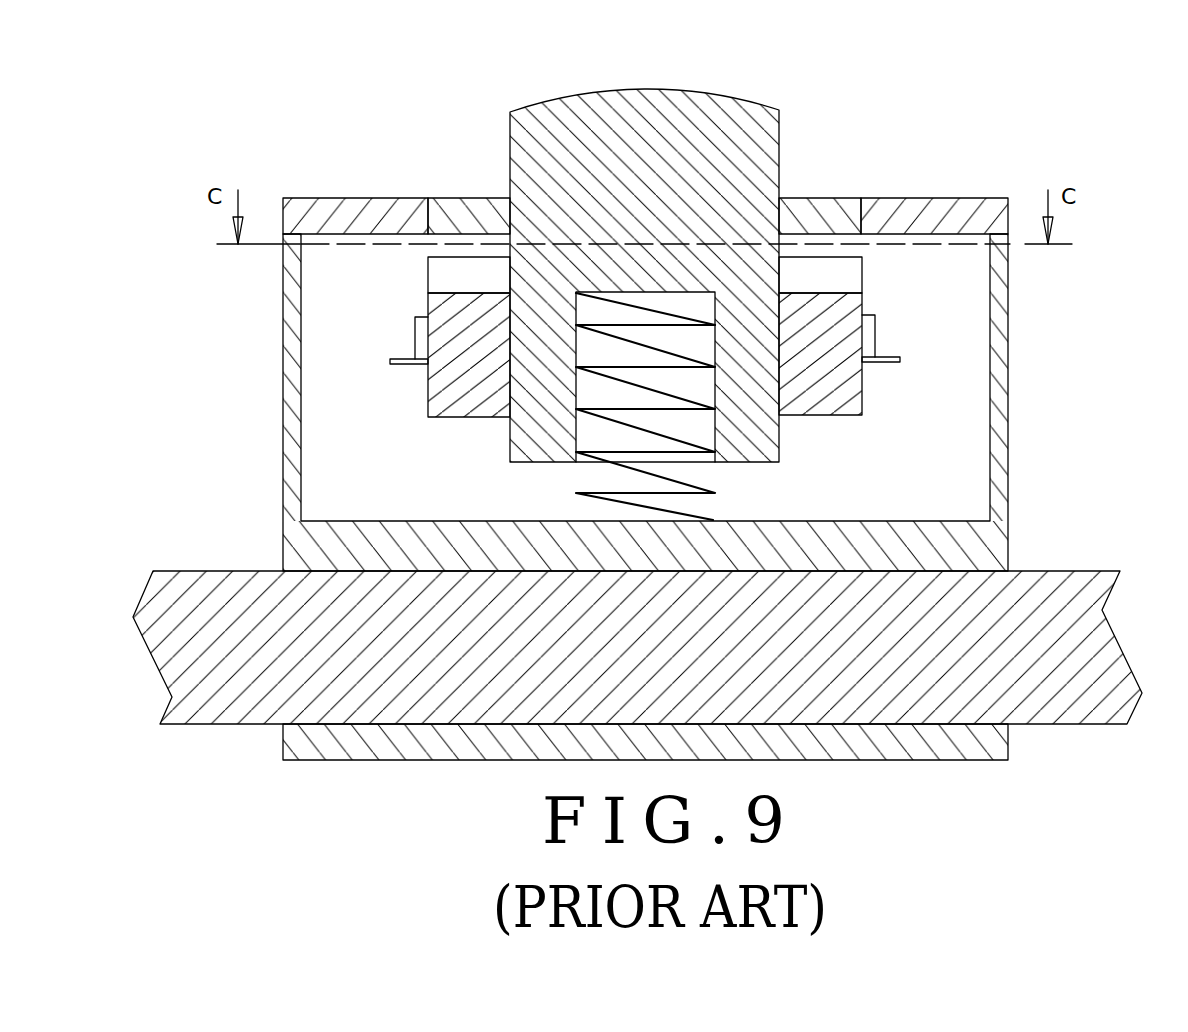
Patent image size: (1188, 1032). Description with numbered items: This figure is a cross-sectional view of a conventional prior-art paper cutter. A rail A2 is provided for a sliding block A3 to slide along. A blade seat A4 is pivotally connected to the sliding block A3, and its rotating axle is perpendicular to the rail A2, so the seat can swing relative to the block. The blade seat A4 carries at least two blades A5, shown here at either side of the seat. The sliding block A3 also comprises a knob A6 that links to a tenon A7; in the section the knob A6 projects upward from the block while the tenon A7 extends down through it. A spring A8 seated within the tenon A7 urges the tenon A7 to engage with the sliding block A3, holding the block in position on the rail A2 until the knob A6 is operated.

The rail A2 is at (1045, 683).
The sliding block A3 is at (1010, 509).
The blade seat A4 is at (823, 382).
The blade A5 is at (398, 358).
The knob A6 is at (685, 155).
The tenon A7 is at (472, 208).
The spring A8 is at (672, 350).